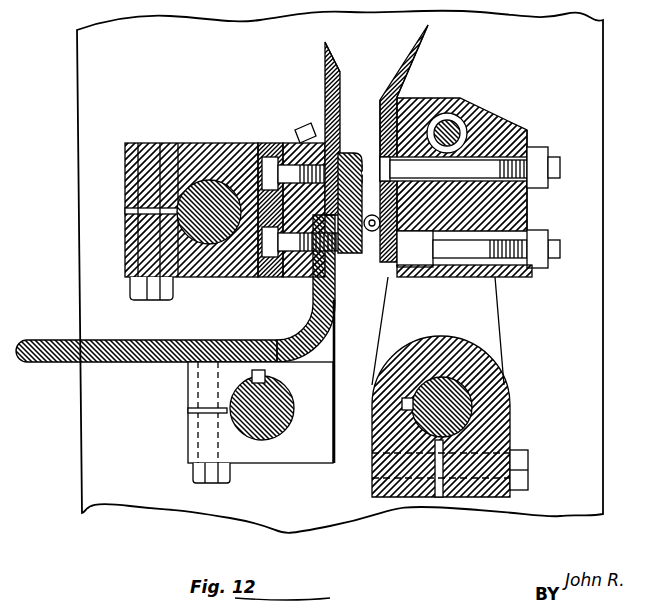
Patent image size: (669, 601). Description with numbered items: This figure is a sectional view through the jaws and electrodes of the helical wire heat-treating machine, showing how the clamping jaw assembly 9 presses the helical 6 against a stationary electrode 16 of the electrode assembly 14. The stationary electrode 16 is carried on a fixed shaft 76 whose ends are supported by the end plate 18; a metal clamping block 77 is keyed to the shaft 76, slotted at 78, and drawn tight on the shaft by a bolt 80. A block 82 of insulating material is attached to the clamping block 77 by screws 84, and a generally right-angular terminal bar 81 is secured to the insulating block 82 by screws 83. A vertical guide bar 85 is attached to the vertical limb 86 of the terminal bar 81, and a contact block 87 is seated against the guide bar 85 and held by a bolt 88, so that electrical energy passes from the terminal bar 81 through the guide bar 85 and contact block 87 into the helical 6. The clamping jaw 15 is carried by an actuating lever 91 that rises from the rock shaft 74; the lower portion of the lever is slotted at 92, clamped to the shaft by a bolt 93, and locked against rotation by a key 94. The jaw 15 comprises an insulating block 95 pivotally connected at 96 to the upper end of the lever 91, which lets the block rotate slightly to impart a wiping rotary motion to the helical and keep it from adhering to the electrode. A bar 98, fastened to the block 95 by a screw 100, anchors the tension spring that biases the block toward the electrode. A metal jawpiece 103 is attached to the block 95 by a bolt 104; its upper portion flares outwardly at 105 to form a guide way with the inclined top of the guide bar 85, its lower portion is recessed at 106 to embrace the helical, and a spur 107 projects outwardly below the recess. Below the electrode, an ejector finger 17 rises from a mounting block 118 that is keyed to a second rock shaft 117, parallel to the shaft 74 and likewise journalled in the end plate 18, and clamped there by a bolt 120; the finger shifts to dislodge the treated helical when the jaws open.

The helical 6 is at (371, 180).
The clamping jaw assembly 9 is at (512, 116).
The electrode assembly 14 is at (140, 142).
The clamping jaw 15 is at (429, 36).
The stationary electrode 16 is at (320, 46).
The ejector finger 17 is at (333, 425).
The end plate 18 is at (590, 408).
The rock shaft 74 is at (460, 401).
The fixed shaft 76 is at (209, 240).
The clamping block 77 is at (178, 143).
The slot 78 is at (126, 211).
The bolt 80 is at (135, 290).
The terminal bar 81 is at (38, 362).
The insulating block 82 is at (272, 143).
The screws 83 is at (287, 276).
The screws 84 is at (252, 158).
The guide bar 85 is at (344, 100).
The vertical limb 86 is at (340, 292).
The contact block 87 is at (355, 152).
The bolt 88 is at (322, 140).
The actuating lever 91 is at (483, 337).
The slot 92 is at (439, 497).
The bolt 93 is at (530, 470).
The key 94 is at (402, 405).
The block 95 is at (480, 110).
The pivotal connection 96 is at (528, 140).
The bar 98 is at (536, 232).
The screw 100 is at (562, 248).
The jawpiece 103 is at (378, 125).
The bolt 104 is at (560, 167).
The flared upper portion 105 is at (408, 45).
The recess 106 is at (388, 278).
The spur 107 is at (369, 232).
The rock shaft 117 is at (256, 438).
The mounting block 118 is at (298, 445).
The bolt 120 is at (192, 473).